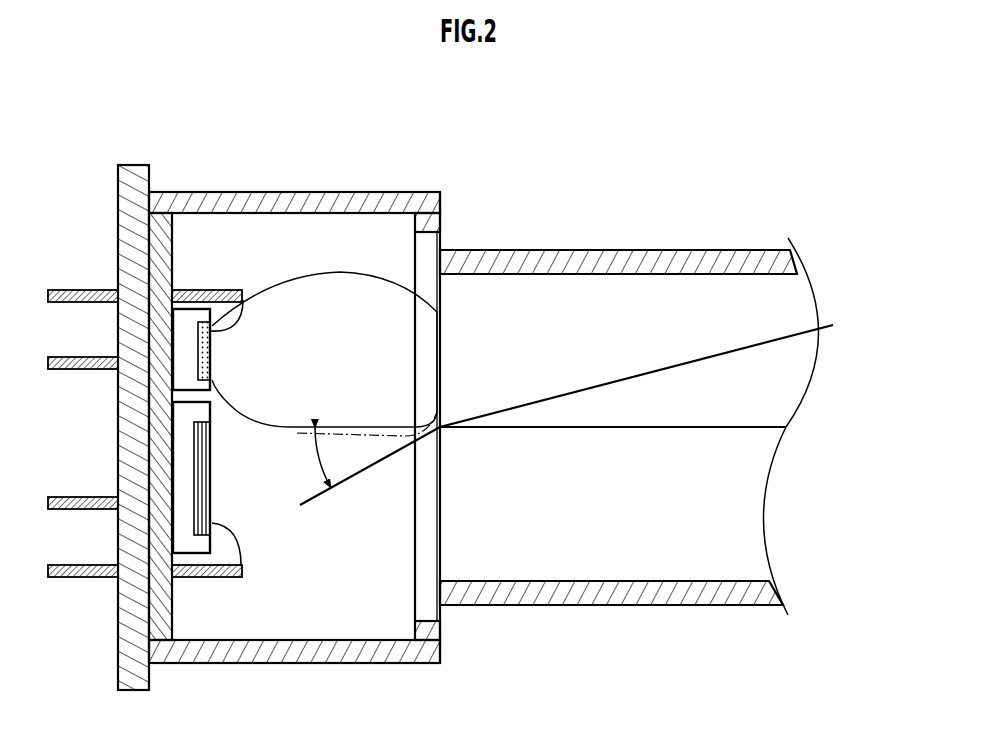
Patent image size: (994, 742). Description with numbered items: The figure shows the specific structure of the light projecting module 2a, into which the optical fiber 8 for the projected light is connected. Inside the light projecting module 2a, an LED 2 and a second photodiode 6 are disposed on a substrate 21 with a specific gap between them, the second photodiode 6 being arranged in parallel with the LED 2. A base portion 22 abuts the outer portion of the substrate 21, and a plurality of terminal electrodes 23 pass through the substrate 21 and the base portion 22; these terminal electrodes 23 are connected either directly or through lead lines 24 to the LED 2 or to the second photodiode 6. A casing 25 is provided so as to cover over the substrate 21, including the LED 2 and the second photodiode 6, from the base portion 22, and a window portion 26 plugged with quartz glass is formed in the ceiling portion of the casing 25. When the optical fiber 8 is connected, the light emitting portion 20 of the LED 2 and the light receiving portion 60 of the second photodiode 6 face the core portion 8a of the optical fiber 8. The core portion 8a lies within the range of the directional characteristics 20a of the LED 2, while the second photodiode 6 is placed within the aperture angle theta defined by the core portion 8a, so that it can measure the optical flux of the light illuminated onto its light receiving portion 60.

The light projecting module 2a is at (313, 119).
The base portion 22 is at (118, 178).
The substrate 21 is at (165, 241).
The casing 25 is at (350, 192).
The window portion 26 is at (437, 243).
The terminal electrodes 23 is at (60, 290).
The LED 2 is at (183, 290).
The light emitting portion 20 is at (212, 350).
The lead lines 24 is at (262, 297).
The directional characteristics 20a is at (350, 272).
The light receiving portion 60 is at (212, 475).
The second photodiode 6 is at (191, 553).
The optical fiber 8 is at (646, 250).
The core portion 8a is at (787, 307).